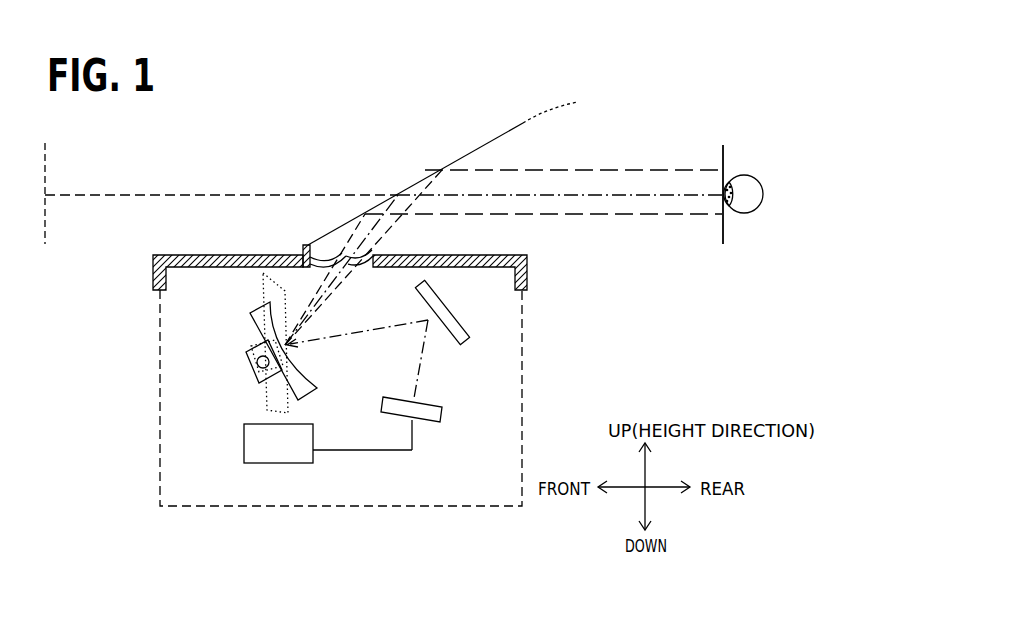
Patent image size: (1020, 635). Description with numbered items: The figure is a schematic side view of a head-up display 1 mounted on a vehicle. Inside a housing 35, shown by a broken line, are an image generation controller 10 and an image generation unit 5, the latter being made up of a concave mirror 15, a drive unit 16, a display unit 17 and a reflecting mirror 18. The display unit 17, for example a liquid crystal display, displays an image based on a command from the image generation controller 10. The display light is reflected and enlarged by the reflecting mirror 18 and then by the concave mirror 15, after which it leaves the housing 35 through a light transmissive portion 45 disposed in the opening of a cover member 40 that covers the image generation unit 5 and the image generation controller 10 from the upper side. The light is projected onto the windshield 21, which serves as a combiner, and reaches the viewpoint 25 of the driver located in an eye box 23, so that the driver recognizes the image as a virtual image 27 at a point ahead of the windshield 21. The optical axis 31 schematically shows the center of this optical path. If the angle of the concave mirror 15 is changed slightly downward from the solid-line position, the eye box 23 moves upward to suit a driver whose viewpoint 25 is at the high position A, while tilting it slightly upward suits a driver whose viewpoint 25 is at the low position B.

The head-up display 1 is at (568, 329).
The image generation unit 5 is at (432, 448).
The image generation controller 10 is at (273, 464).
The concave mirror 15 is at (250, 316).
The drive unit 16 is at (247, 352).
The display unit 17 is at (440, 405).
The reflecting mirror 18 is at (453, 302).
The windshield 21 is at (497, 138).
The eye box 23 is at (722, 149).
The viewpoint 25 is at (751, 190).
The virtual image 27 is at (48, 150).
The optical axis 31 is at (582, 197).
The housing 35 is at (157, 348).
The cover member 40 is at (233, 254).
The light transmissive portion 45 is at (366, 277).